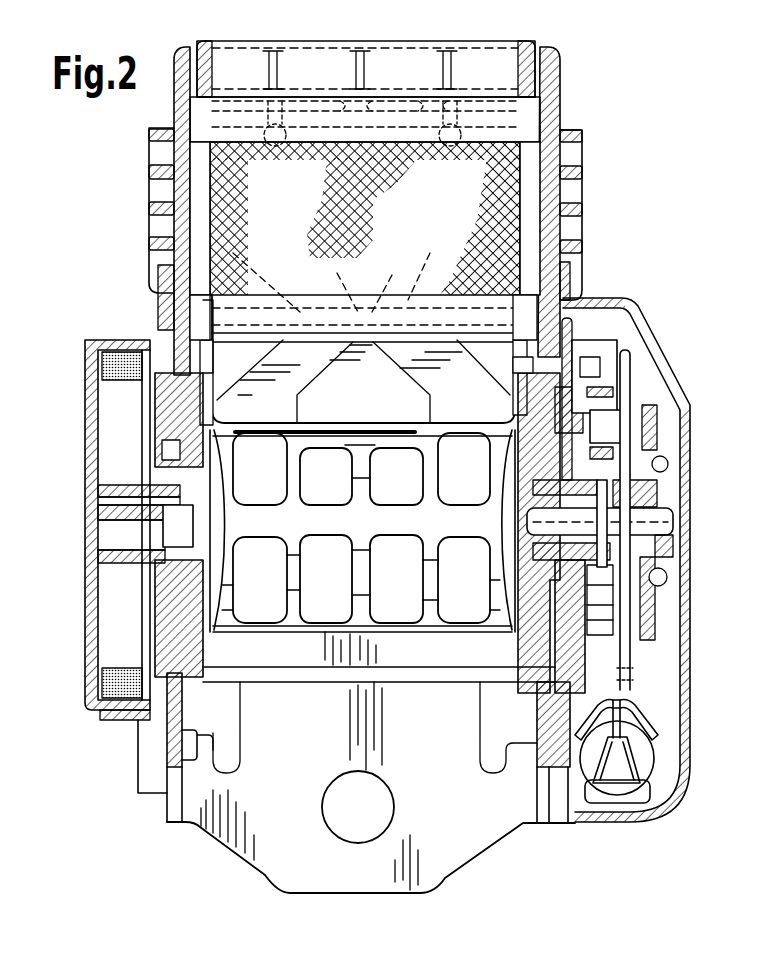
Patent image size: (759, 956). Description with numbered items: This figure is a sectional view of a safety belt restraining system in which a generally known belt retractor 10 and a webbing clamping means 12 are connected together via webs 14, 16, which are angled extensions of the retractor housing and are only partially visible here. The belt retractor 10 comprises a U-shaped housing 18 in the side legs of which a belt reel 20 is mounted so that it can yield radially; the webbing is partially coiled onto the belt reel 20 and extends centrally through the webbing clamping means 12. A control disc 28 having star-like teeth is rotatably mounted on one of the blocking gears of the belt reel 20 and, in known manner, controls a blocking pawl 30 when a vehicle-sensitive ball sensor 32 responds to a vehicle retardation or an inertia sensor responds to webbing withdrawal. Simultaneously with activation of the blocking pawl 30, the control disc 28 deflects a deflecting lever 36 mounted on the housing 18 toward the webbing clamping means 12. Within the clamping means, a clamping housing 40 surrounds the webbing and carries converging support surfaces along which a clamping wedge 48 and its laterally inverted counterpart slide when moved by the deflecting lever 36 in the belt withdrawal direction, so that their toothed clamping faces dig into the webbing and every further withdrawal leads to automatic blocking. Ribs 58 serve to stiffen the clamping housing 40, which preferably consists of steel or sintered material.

The belt retractor 10 is at (180, 835).
The webbing clamping means 12 is at (572, 68).
The web 14 is at (323, 348).
The web 16 is at (410, 345).
The housing 18 is at (176, 745).
The belt reel 20 is at (350, 443).
The control disc 28 is at (628, 663).
The blocking pawl 30 is at (465, 677).
The vehicle-sensitive ball sensor 32 is at (645, 765).
The deflecting lever 36 is at (412, 318).
The clamping housing 40 is at (548, 105).
The clamping wedge 48 is at (530, 196).
The ribs 58 is at (148, 156).